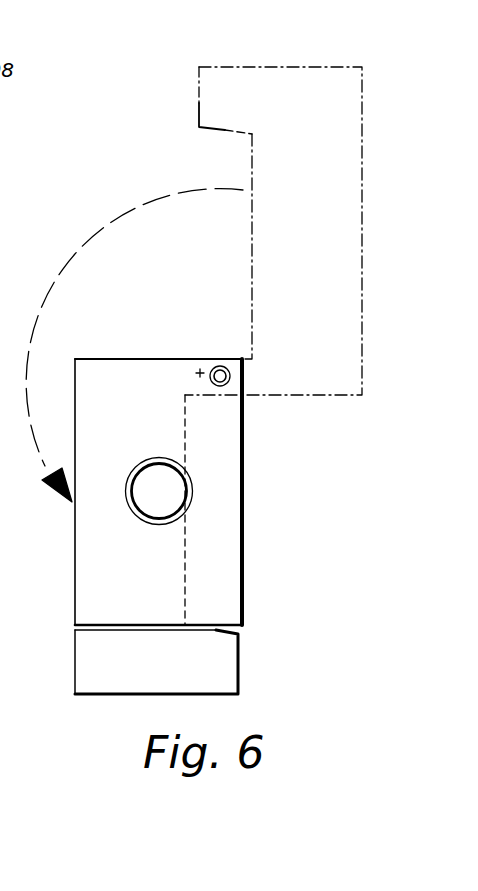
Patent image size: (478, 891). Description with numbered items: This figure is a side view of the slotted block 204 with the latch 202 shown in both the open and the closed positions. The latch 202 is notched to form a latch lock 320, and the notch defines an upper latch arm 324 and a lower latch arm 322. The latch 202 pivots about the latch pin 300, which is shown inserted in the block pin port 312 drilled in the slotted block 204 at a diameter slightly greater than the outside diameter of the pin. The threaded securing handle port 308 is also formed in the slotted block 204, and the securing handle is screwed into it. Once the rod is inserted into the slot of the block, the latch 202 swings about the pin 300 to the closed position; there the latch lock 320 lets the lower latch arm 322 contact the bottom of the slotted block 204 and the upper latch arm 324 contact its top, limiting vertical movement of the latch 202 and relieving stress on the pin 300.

The latch 202 is at (363, 105).
The slotted block 204 is at (245, 562).
The latch pin 300 is at (211, 367).
The securing handle port 308 is at (190, 503).
The block pin port 312 is at (199, 372).
The latch lock 320 is at (252, 165).
The lower latch arm 322 is at (199, 106).
The upper latch arm 324 is at (205, 388).